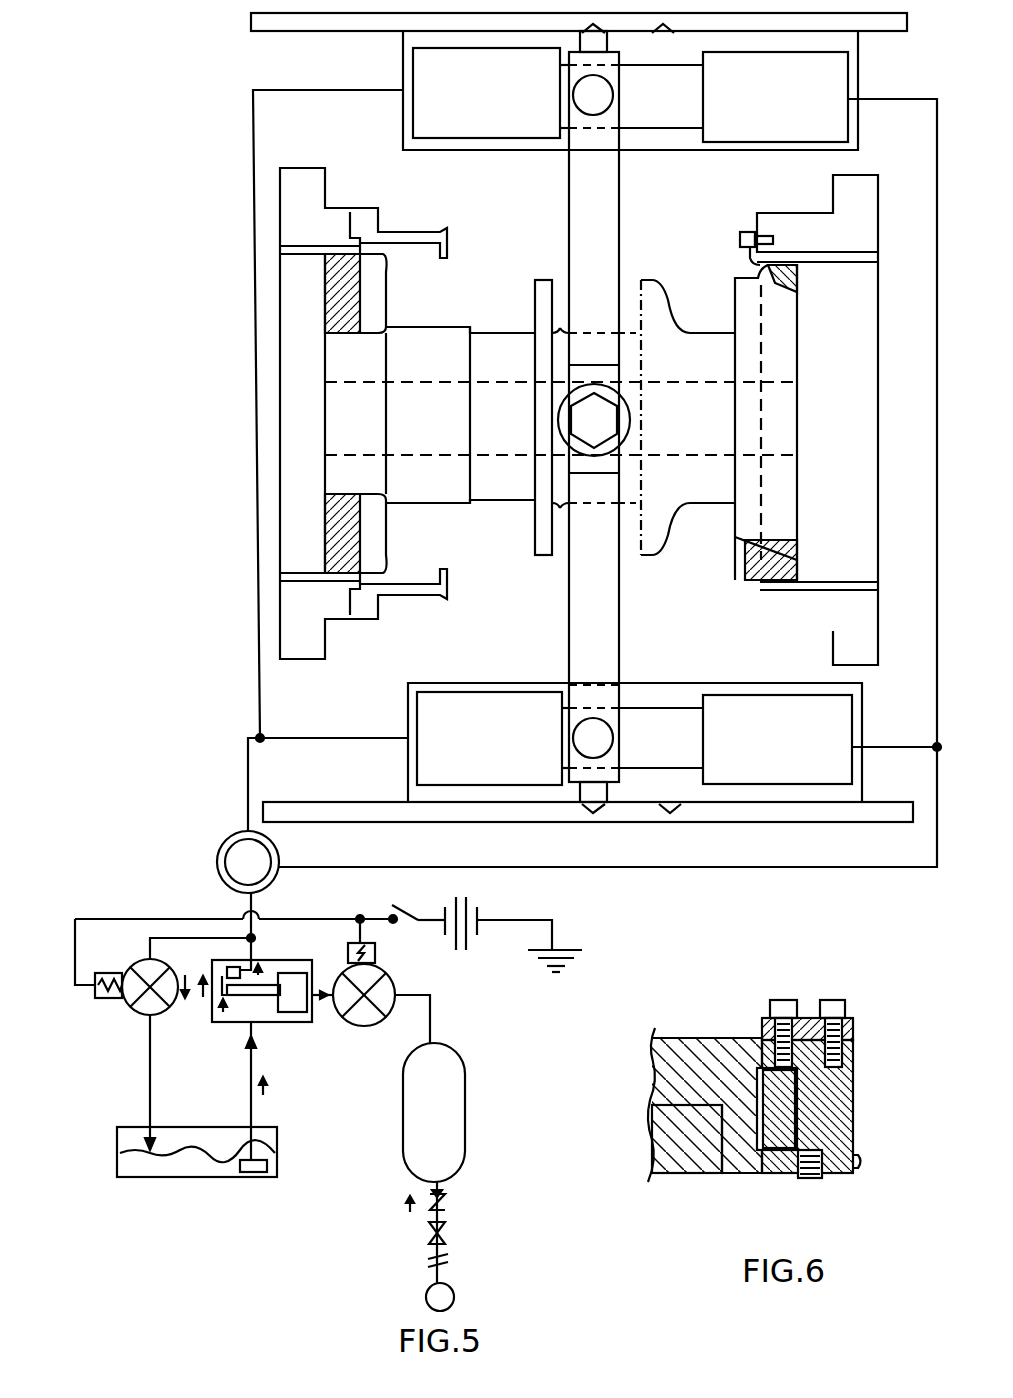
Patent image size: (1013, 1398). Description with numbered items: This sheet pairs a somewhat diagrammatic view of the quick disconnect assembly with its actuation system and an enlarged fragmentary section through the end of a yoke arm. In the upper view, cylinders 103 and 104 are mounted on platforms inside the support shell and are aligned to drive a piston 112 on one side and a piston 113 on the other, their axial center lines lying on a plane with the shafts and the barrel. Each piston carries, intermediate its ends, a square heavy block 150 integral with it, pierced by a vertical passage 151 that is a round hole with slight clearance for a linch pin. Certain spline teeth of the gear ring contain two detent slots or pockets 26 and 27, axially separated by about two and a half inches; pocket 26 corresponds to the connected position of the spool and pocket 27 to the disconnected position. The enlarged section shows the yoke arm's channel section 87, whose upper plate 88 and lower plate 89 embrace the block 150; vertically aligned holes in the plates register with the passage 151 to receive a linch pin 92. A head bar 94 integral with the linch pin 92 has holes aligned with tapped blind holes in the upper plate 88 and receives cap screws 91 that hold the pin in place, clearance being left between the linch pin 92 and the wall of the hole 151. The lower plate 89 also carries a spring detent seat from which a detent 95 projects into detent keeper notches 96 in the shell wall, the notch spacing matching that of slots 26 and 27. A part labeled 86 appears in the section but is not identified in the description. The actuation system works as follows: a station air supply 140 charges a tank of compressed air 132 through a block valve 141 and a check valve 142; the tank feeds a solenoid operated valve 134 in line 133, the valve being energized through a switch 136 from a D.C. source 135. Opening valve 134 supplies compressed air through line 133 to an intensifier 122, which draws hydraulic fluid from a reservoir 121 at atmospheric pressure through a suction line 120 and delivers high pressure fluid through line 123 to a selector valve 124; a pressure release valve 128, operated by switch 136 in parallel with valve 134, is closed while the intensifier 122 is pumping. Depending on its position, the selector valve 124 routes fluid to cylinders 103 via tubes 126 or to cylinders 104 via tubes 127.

In FIG. 5, the detent slot or pocket 26 is at (778, 250).
In FIG. 5, the detent slot or pocket 27 is at (862, 582).
In FIG. 6, the lower block 86 is at (705, 1175).
In FIG. 6, the channel section 87 is at (716, 1040).
In FIG. 6, the upper plate 88 is at (850, 1049).
In FIG. 6, the lower plate 89 is at (853, 1176).
In FIG. 6, the cap screws 91 is at (800, 1000).
In FIG. 6, the linch pin 92 is at (812, 1118).
In FIG. 6, the head bar 94 is at (855, 1026).
In FIG. 5, the detent 95 is at (578, 50).
In FIG. 6, the detent 95 is at (865, 1162).
In FIG. 5, the detent keeper notches 96 is at (666, 30).
In FIG. 5, the cylinders 103 is at (504, 122).
In FIG. 5, the cylinders 104 is at (795, 120).
In FIG. 5, the piston 112 is at (663, 725).
In FIG. 5, the piston 113 is at (678, 136).
In FIG. 5, the suction line 120 is at (250, 1090).
In FIG. 5, the reservoir 121 is at (278, 1140).
In FIG. 5, the intensifier 122 is at (306, 1024).
In FIG. 5, the line 123 is at (258, 914).
In FIG. 5, the selector valve 124 is at (278, 858).
In FIG. 5, the tubes 126 is at (253, 352).
In FIG. 5, the tubes 127 is at (937, 332).
In FIG. 5, the pressure release valve 128 is at (120, 965).
In FIG. 5, the tank of compressed air 132 is at (465, 1140).
In FIG. 5, the line 133 is at (432, 1036).
In FIG. 5, the solenoid operated valve 134 is at (392, 980).
In FIG. 5, the D.C. source 135 is at (480, 904).
In FIG. 5, the switch 136 is at (400, 904).
In FIG. 5, the station air supply 140 is at (455, 1297).
In FIG. 5, the block valve 141 is at (446, 1236).
In FIG. 5, the check valve 142 is at (446, 1202).
In FIG. 6, the block 150 is at (843, 1093).
In FIG. 6, the vertical passage 151 is at (788, 1180).